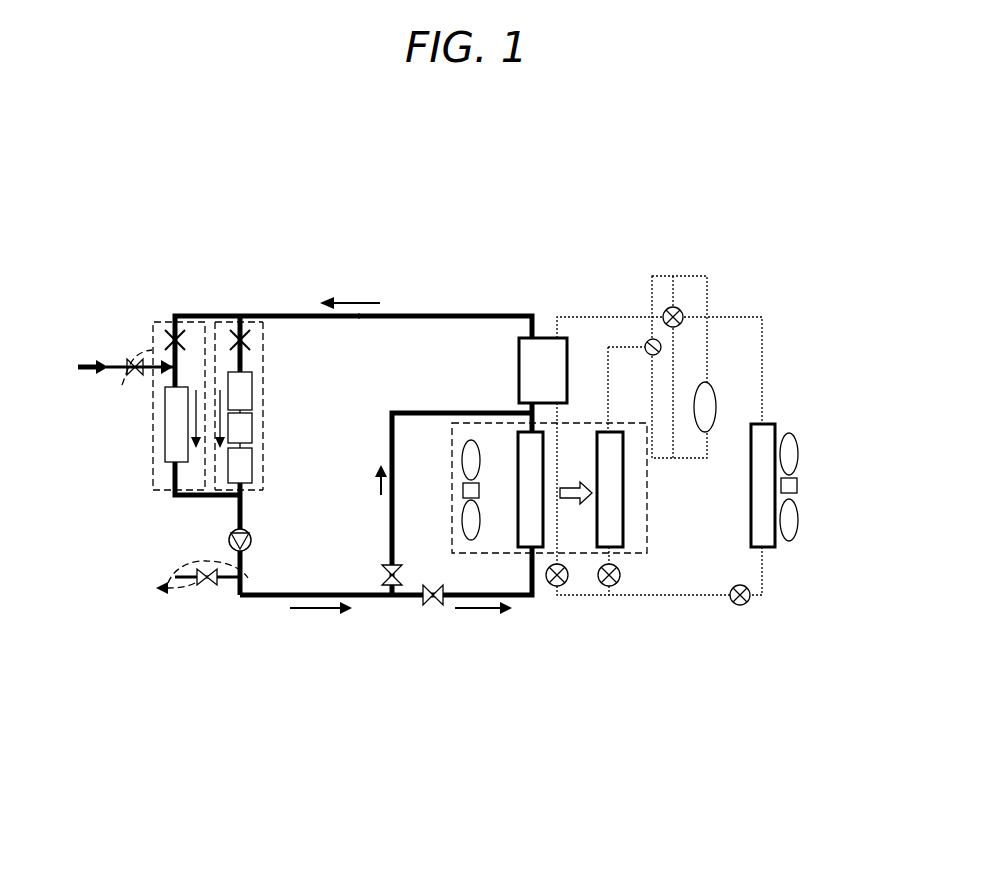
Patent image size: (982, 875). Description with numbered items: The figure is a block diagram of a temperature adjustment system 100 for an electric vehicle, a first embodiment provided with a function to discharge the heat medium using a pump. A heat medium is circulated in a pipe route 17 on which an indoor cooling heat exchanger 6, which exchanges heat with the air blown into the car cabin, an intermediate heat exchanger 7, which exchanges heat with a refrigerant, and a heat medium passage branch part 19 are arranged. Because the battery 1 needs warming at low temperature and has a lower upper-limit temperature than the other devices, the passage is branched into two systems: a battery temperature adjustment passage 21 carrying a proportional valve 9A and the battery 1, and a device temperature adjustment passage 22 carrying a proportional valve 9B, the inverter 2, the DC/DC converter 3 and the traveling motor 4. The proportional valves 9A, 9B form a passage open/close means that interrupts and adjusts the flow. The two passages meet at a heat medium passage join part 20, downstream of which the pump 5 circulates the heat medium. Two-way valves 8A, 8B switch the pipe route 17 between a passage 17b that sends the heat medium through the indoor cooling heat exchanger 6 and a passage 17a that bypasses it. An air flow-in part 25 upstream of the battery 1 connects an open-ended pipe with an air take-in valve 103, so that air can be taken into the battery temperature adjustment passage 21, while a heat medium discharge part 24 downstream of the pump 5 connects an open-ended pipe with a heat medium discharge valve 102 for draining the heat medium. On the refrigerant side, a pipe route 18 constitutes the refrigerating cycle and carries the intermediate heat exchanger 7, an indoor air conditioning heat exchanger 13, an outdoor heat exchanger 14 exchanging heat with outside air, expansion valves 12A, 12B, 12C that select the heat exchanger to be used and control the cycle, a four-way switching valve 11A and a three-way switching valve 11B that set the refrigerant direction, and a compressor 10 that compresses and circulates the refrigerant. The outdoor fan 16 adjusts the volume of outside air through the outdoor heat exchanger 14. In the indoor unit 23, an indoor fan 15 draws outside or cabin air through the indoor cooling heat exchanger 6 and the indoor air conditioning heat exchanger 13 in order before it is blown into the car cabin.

The battery 1 is at (163, 428).
The inverter 2 is at (252, 392).
The DC/DC converter 3 is at (253, 428).
The traveling motor 4 is at (253, 468).
The pump 5 is at (253, 536).
The indoor cooling heat exchanger 6 is at (540, 557).
The intermediate heat exchanger 7 is at (543, 337).
The two-way valve 8A is at (398, 592).
The two-way valve 8B is at (437, 600).
The proportional valve 9A is at (164, 337).
The proportional valve 9B is at (225, 345).
The compressor 10 is at (717, 400).
The switching valve (four-way valve) 11A is at (667, 307).
The switching valve (three-way valve) 11B is at (647, 340).
The expansion valve 12A is at (745, 606).
The expansion valve 12B is at (613, 587).
The expansion valve 12C is at (562, 586).
The indoor air conditioning heat exchanger 13 is at (625, 550).
The outdoor heat exchanger 14 is at (776, 548).
The indoor fan 15 is at (478, 543).
The outdoor fan 16 is at (798, 450).
The pipe route 17 is at (357, 325).
The passage 17a is at (390, 550).
The passage 17b is at (454, 590).
The pipe route 18 is at (712, 598).
The heat medium passage branch part 19 is at (240, 316).
The heat medium passage join part 20 is at (230, 500).
The battery temperature adjustment passage 21 is at (176, 316).
The device temperature adjustment passage 22 is at (265, 340).
The indoor unit 23 is at (591, 420).
The heat medium discharge part 24 is at (192, 592).
The air flow-in part 25 is at (130, 360).
The temperature adjustment system 100 is at (480, 720).
The heat medium discharge valve 102 is at (210, 590).
The air take-in valve 103 is at (147, 352).